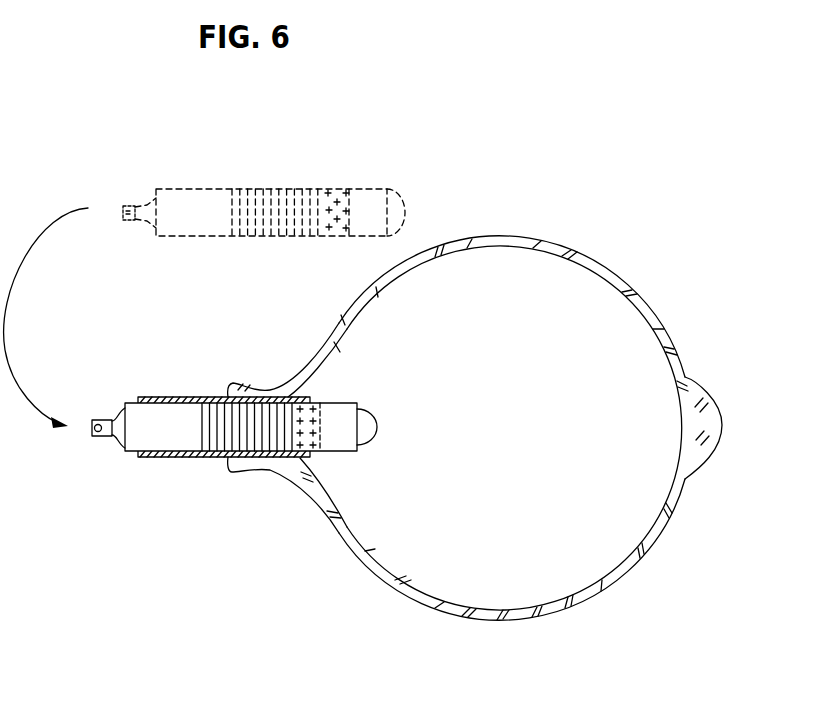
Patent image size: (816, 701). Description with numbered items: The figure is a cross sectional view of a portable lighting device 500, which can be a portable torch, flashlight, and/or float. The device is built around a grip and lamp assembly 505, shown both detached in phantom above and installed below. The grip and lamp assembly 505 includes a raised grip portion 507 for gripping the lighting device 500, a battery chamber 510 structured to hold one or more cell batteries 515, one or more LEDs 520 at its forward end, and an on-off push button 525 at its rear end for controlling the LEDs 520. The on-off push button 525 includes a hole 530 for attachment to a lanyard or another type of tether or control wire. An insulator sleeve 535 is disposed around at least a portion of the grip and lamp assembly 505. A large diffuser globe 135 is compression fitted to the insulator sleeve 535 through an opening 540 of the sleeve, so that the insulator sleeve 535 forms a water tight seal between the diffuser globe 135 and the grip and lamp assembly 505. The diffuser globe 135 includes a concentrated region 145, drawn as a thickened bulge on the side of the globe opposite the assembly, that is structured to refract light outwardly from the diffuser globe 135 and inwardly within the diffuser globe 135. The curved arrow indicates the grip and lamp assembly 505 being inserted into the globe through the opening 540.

The diffuser globe 135 is at (667, 299).
The concentrated region 145 is at (716, 410).
The portable lighting device 500 is at (488, 368).
The grip and lamp assembly 505 is at (255, 193).
The raised grip portion 507 is at (318, 184).
The battery chamber 510 is at (347, 188).
The cell batteries 515 is at (337, 234).
The LEDs 520 is at (405, 208).
The on-off push button 525 is at (148, 205).
The hole 530 is at (133, 220).
The insulator sleeve 535 is at (178, 458).
The opening 540 is at (320, 389).